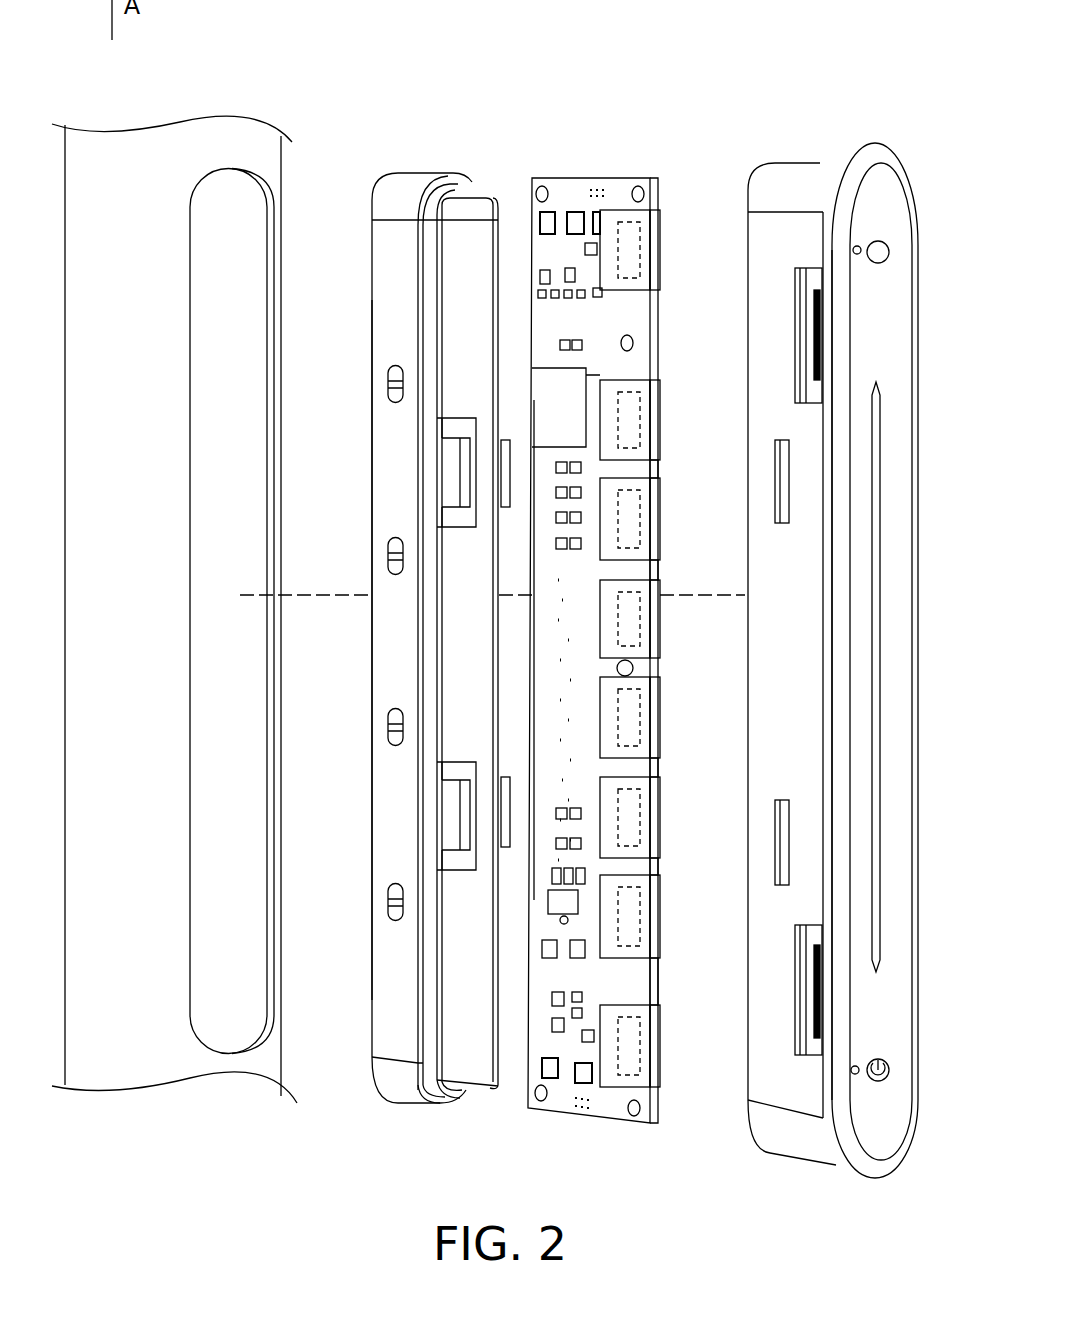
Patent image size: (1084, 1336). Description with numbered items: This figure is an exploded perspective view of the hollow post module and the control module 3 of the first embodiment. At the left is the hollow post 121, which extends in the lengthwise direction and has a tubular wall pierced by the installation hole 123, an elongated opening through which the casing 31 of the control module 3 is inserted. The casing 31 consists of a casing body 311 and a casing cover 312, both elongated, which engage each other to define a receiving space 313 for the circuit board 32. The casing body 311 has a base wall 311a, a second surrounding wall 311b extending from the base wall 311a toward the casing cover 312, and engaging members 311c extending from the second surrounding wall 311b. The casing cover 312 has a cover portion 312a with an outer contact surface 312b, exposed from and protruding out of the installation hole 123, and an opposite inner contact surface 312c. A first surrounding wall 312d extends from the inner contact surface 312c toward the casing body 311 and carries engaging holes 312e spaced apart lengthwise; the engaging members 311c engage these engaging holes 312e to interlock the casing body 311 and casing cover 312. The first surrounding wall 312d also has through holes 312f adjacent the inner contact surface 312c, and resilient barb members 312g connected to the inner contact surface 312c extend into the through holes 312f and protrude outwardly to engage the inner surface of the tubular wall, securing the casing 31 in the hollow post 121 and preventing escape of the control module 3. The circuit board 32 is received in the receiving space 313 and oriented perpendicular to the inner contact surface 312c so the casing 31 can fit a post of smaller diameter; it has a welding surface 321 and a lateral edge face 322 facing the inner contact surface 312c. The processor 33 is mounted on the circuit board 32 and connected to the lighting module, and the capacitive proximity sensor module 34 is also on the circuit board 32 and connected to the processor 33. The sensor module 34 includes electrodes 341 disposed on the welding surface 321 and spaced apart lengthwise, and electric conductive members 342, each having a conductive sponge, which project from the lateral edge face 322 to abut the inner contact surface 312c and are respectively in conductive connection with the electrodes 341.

The control module 3 is at (656, 68).
The casing 31 is at (363, 150).
The casing body 311 is at (421, 172).
The base wall 311a is at (372, 292).
The second surrounding wall 311b is at (402, 244).
The engaging members 311c is at (455, 475).
The receiving space 313 is at (514, 1068).
The circuit board 32 is at (633, 652).
The welding surface 321 is at (570, 1100).
The lateral edge face 322 is at (648, 673).
The processor 33 is at (598, 381).
The capacitive proximity sensor module 34 is at (618, 1092).
The electrodes 341 is at (648, 254).
The electric conductive members 342 is at (655, 1022).
The casing cover 312 is at (873, 143).
The cover portion 312a is at (852, 166).
The outer contact surface 312b is at (886, 184).
The inner contact surface 312c is at (822, 198).
The first surrounding wall 312d is at (762, 226).
The engaging holes 312e is at (782, 491).
The through holes 312f is at (806, 396).
The resilient barb members 312g is at (816, 302).
The hollow post 121 is at (160, 142).
The installation hole 123 is at (250, 981).